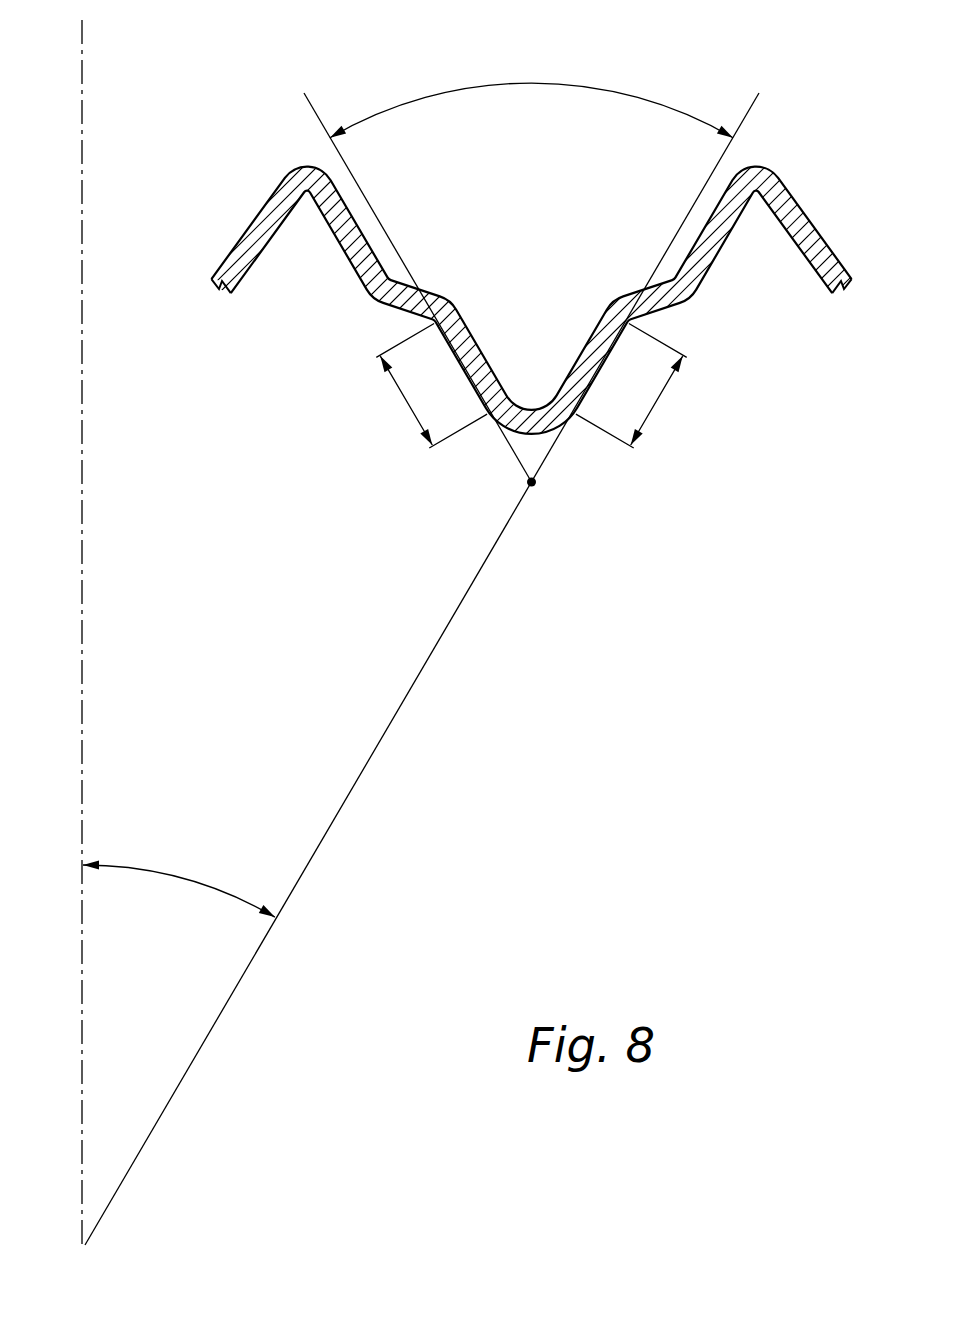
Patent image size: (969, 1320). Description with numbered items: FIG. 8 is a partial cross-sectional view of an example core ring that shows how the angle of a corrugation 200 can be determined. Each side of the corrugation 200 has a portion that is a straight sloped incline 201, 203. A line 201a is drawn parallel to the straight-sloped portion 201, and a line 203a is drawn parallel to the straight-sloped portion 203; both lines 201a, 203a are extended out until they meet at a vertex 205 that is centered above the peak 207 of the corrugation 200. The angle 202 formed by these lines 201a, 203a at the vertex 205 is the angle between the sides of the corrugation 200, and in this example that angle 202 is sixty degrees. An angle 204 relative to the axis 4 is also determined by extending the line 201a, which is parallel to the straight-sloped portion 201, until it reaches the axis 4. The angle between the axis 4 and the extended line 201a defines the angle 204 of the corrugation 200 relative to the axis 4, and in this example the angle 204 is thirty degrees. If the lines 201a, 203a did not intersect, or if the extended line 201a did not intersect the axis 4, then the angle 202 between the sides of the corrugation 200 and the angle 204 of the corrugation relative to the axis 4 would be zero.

The axis 4 is at (82, 77).
The corrugation 200 is at (538, 346).
The straight sloped incline 201 is at (657, 401).
The straight sloped incline 203 is at (406, 401).
The line 201a is at (757, 94).
The line 203a is at (307, 101).
The angle between the sides of the corrugation 202 is at (532, 83).
The angle of the corrugation relative to the axis 204 is at (184, 877).
The vertex 205 is at (531, 482).
The peak 207 is at (532, 436).